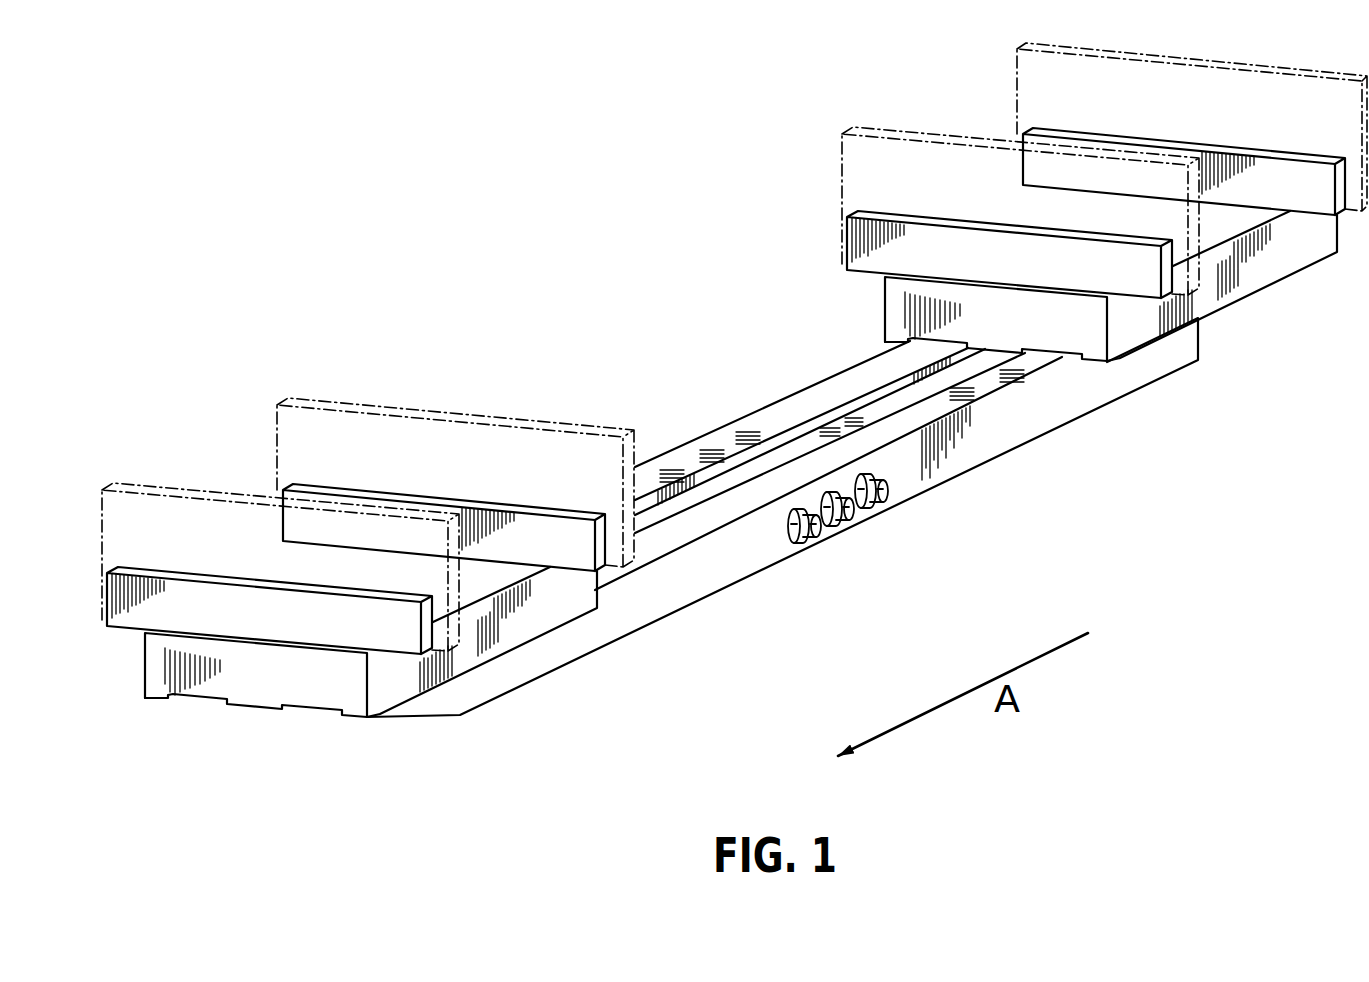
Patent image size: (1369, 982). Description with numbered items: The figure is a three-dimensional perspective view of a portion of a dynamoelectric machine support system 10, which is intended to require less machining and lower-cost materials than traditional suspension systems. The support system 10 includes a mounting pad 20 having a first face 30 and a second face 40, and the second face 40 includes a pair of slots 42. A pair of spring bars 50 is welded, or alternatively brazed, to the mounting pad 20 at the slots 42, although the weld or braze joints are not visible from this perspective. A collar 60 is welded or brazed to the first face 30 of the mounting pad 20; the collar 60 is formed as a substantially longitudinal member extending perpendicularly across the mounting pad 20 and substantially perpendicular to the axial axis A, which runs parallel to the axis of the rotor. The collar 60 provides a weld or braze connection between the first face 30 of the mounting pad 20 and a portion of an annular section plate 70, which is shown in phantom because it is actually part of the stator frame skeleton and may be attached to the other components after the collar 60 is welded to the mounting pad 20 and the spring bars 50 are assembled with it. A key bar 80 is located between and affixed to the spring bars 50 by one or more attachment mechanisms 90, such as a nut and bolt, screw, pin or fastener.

The support system 10 is at (546, 301).
The mounting pad 20 is at (246, 684).
The first face 30 is at (480, 603).
The second face 40 is at (245, 730).
The slots 42 is at (183, 722).
The spring bars 50 is at (785, 415).
The collar 60 is at (247, 628).
The section plate 70 is at (198, 544).
The key bar 80 is at (875, 392).
The attachment mechanisms 90 is at (822, 563).